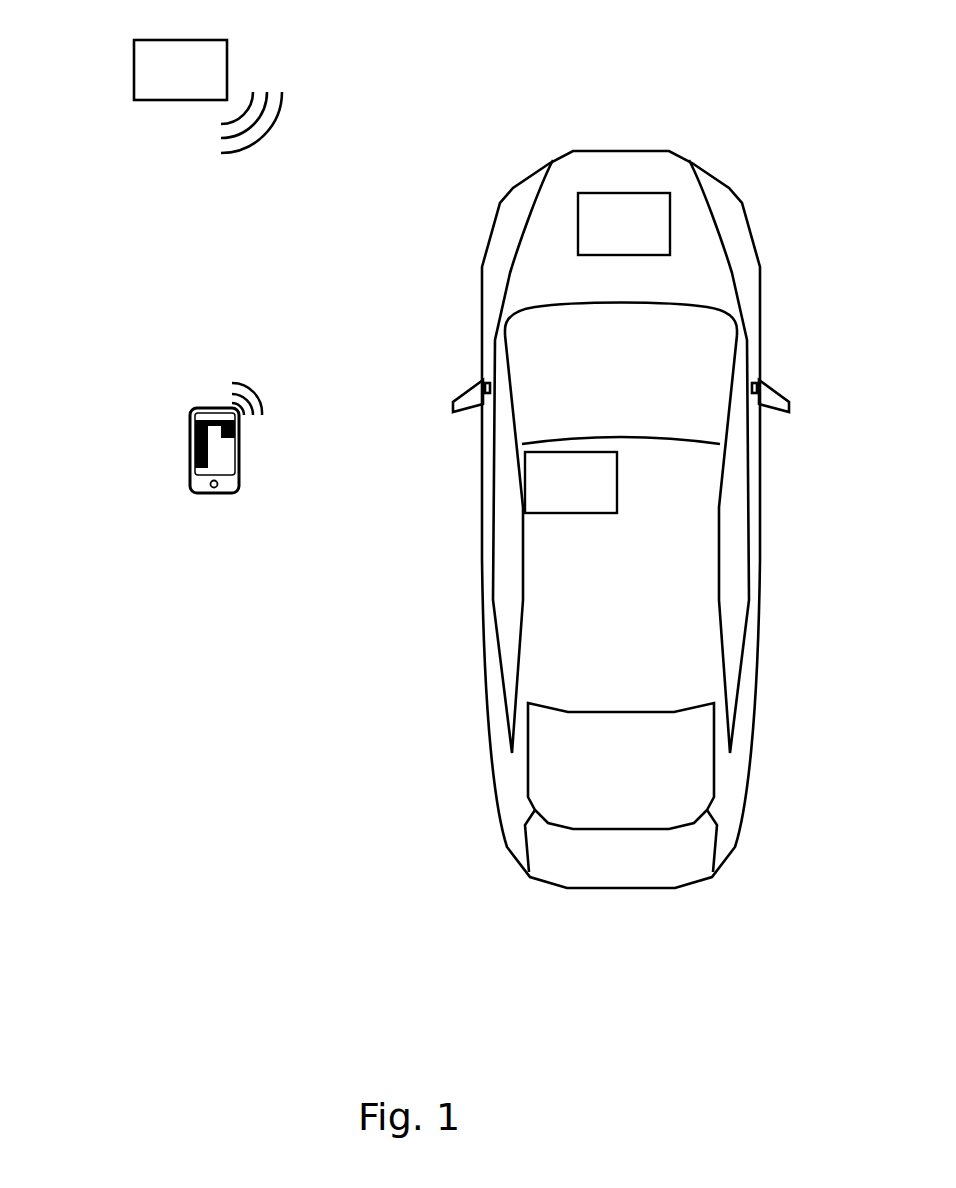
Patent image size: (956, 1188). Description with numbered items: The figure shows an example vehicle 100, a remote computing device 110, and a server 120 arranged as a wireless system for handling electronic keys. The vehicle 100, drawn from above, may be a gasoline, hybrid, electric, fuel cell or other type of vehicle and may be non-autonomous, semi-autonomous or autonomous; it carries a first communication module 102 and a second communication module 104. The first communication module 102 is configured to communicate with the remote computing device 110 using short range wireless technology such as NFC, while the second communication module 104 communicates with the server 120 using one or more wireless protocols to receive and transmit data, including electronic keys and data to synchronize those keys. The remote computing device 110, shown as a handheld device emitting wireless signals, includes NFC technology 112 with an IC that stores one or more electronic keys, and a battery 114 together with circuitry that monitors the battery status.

The vehicle 100 is at (553, 160).
The first communication module 102 is at (571, 482).
The second communication module 104 is at (624, 224).
The remote computing device 110 is at (205, 408).
The NFC technology 112 is at (238, 434).
The battery 114 is at (190, 447).
The server 120 is at (208, 96).